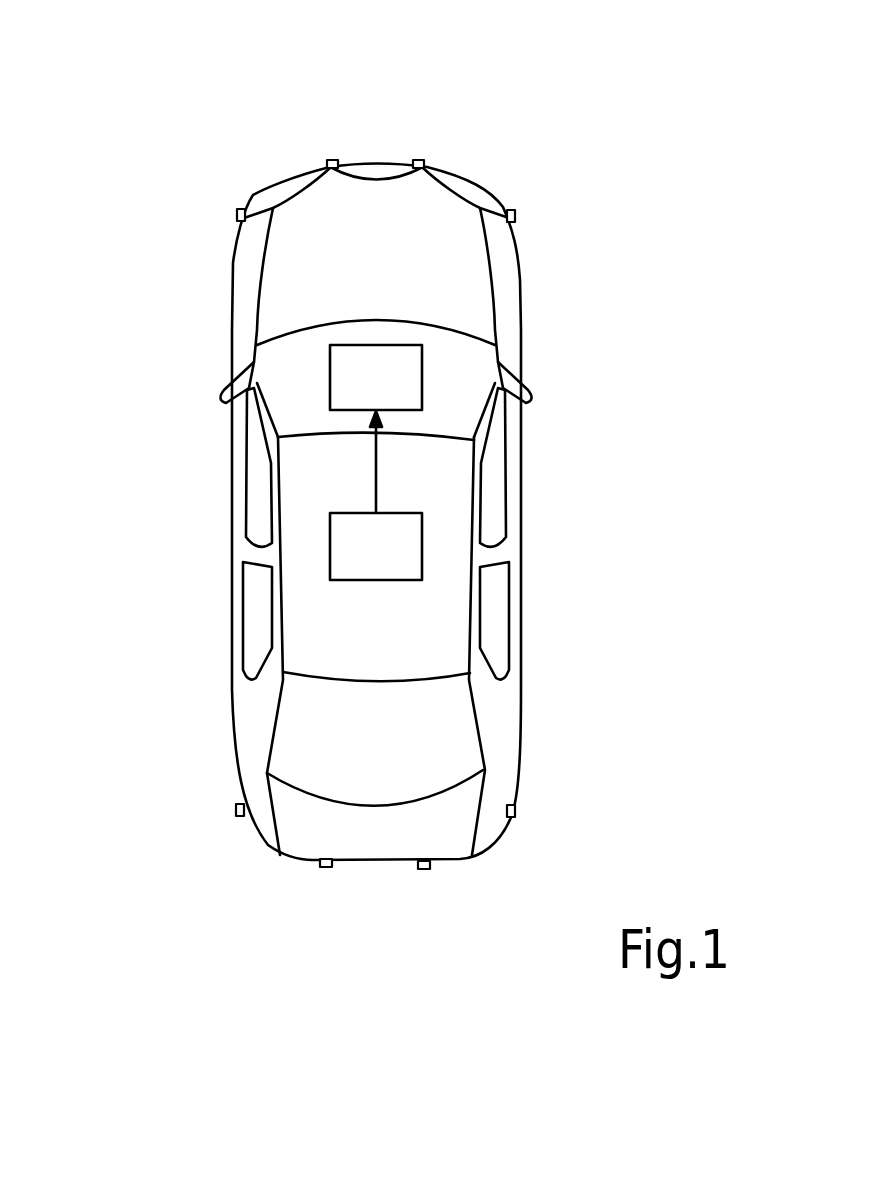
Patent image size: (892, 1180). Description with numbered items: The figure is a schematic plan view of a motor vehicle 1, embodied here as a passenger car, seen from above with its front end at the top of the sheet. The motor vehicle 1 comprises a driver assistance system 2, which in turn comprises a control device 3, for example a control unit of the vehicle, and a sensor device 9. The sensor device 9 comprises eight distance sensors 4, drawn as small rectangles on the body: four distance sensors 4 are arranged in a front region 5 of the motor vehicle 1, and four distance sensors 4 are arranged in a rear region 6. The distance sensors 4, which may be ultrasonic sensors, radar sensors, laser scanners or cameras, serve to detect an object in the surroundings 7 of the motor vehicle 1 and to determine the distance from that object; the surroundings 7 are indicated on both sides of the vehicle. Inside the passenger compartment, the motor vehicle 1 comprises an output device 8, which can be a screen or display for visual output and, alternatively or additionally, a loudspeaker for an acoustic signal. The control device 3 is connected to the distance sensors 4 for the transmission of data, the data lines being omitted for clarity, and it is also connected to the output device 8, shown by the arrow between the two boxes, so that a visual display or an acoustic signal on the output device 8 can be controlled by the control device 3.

The motor vehicle 1 is at (377, 165).
The driver assistance system 2 is at (290, 502).
The control device 3 is at (413, 530).
The distance sensors 4 is at (332, 160).
The front region 5 is at (486, 87).
The rear region 6 is at (354, 908).
The surroundings 7 is at (187, 370).
The output device 8 is at (415, 353).
The sensor device 9 is at (165, 168).